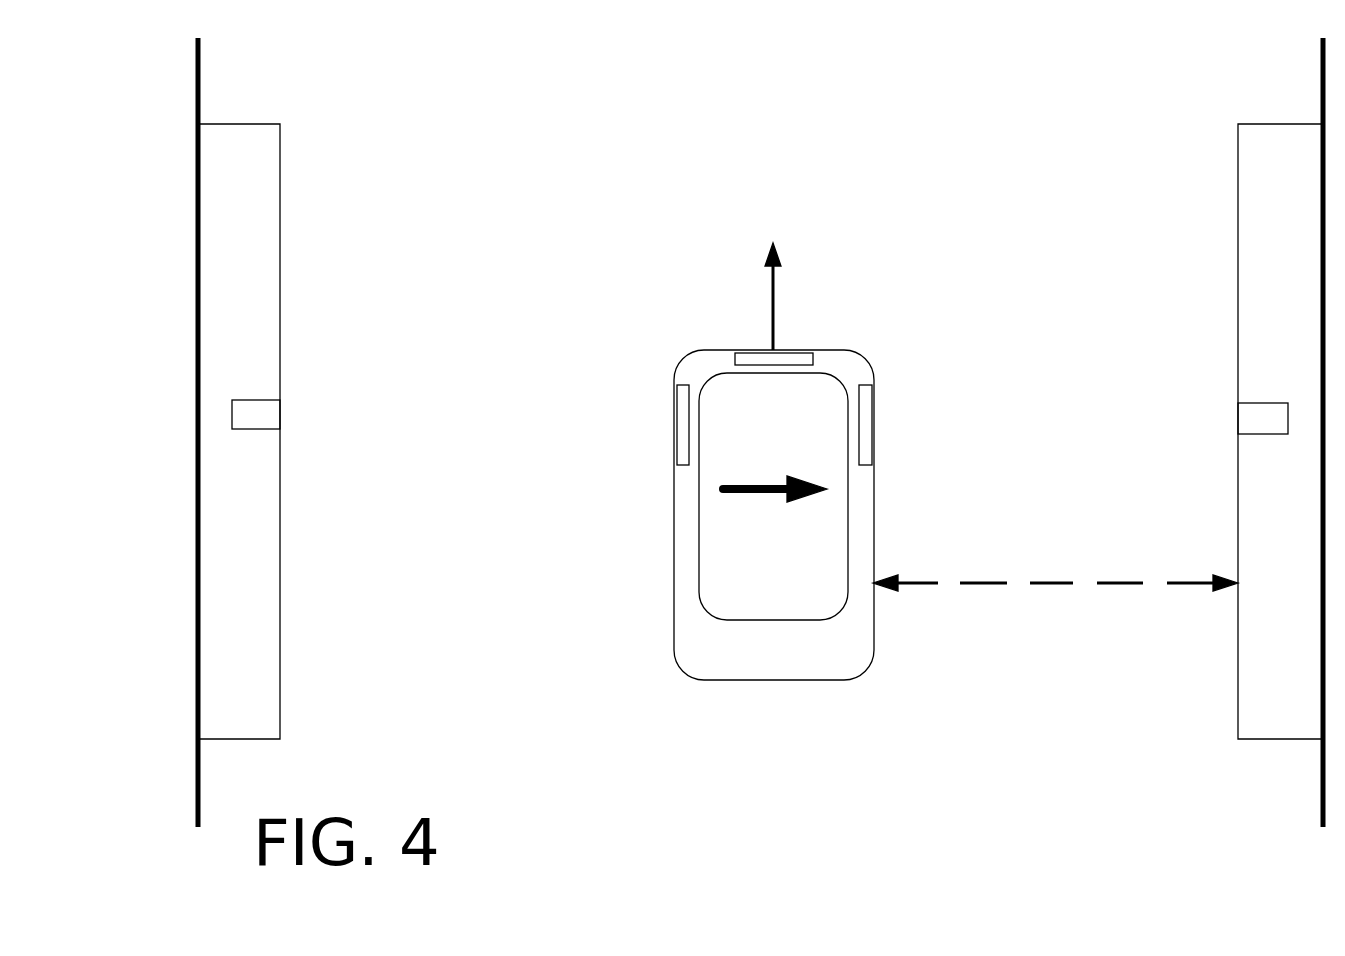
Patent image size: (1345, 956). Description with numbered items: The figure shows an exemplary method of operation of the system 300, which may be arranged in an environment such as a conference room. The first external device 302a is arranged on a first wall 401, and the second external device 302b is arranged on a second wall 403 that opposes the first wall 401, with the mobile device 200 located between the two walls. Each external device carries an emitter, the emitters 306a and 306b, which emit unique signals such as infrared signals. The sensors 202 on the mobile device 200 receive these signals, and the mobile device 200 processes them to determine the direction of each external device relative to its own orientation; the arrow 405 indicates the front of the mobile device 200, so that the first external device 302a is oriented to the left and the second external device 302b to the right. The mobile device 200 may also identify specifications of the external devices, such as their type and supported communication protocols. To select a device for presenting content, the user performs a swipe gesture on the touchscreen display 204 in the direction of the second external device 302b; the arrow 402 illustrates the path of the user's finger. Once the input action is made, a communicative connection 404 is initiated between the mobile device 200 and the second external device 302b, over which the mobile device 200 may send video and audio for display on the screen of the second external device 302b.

The system 300 is at (527, 106).
The first wall 401 is at (198, 80).
The second wall 403 is at (1323, 67).
The first external device 302a is at (258, 124).
The second external device 302b is at (1268, 124).
The emitter 306a is at (265, 402).
The emitter 306b is at (1258, 422).
The mobile device 200 is at (700, 352).
The sensors 202 is at (681, 432).
The touchscreen display 204 is at (793, 571).
The arrow 402 is at (790, 480).
The communicative connection 404 is at (1072, 583).
The arrow 405 is at (775, 293).